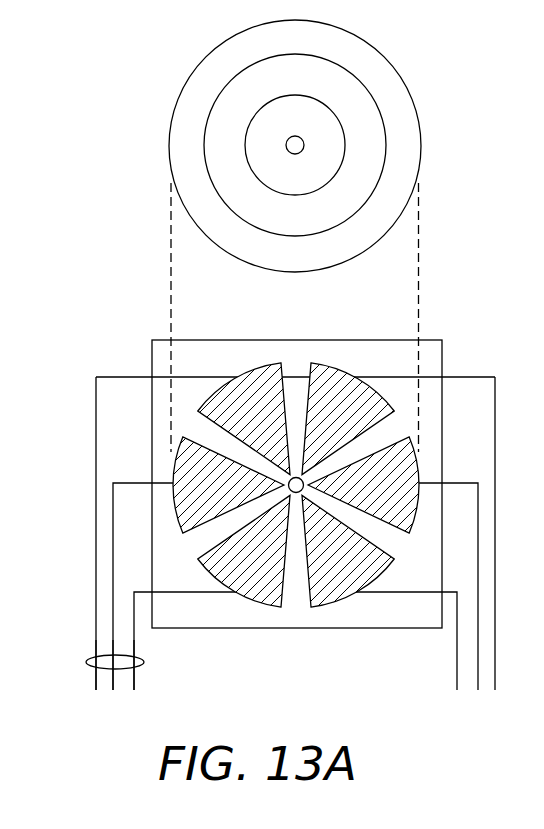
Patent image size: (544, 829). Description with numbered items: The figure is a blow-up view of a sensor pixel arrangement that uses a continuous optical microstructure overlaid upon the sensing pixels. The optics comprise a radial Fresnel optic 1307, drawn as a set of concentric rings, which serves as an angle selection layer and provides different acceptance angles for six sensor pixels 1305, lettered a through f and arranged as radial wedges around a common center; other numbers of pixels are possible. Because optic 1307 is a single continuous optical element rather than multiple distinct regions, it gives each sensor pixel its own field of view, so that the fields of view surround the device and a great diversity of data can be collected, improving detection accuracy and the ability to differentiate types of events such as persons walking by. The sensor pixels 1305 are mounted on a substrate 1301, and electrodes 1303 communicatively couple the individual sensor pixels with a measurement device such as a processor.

The substrate 1301 is at (407, 615).
The electrodes 1303 is at (144, 662).
The sensor pixels 1305 is at (393, 457).
The radial Fresnel optic 1307 is at (418, 67).